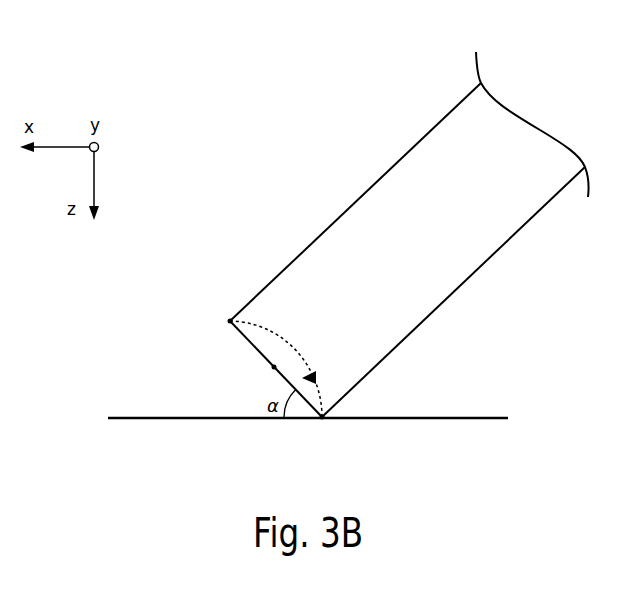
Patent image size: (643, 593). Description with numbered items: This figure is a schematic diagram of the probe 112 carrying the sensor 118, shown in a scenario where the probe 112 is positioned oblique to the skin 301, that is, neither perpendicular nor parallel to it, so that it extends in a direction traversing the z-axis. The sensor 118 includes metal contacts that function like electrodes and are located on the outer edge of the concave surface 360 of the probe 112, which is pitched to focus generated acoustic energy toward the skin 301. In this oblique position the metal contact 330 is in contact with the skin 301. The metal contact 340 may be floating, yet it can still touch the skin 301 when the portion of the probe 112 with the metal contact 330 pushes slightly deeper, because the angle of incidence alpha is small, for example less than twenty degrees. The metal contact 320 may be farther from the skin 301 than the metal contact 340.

The probe 112 is at (400, 188).
The sensor 118 is at (238, 266).
The skin 301 is at (460, 418).
The metal contact 320 is at (230, 321).
The metal contact 330 is at (322, 419).
The metal contact 340 is at (274, 367).
The concave surface 360 is at (314, 377).